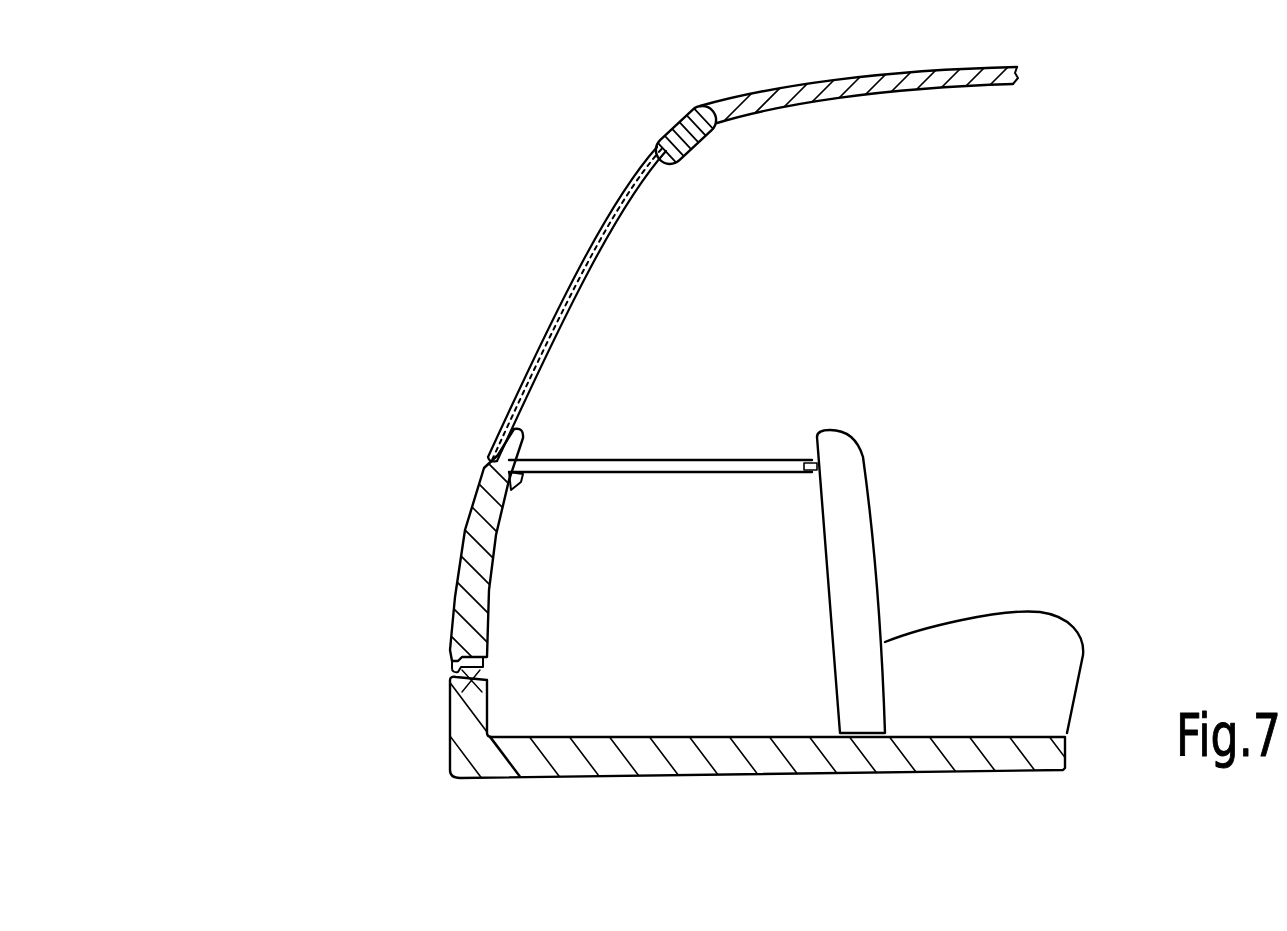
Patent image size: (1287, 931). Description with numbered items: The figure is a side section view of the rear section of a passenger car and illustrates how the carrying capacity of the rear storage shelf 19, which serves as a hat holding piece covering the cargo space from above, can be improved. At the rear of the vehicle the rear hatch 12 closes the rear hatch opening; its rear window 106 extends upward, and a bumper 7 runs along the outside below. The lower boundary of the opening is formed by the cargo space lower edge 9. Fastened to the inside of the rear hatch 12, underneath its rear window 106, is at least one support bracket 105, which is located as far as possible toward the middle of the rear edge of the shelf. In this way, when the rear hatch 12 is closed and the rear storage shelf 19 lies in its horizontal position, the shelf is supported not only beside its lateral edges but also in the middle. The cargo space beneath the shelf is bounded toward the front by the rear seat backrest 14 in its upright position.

The bumper 7 is at (445, 735).
The cargo space lower edge 9 is at (447, 697).
The rear hatch 12 is at (463, 541).
The rear seat backrest 14 is at (847, 557).
The rear storage shelf 19 is at (745, 395).
The support bracket 105 is at (513, 483).
The rear window 106 is at (567, 317).